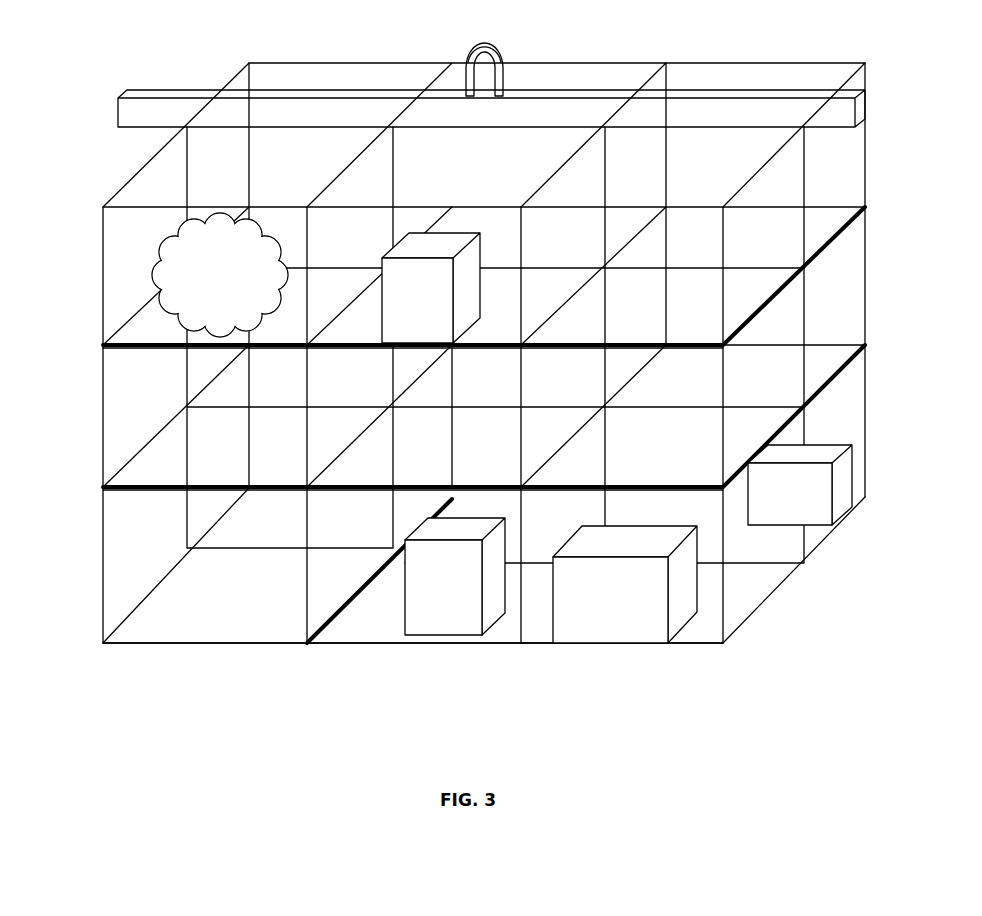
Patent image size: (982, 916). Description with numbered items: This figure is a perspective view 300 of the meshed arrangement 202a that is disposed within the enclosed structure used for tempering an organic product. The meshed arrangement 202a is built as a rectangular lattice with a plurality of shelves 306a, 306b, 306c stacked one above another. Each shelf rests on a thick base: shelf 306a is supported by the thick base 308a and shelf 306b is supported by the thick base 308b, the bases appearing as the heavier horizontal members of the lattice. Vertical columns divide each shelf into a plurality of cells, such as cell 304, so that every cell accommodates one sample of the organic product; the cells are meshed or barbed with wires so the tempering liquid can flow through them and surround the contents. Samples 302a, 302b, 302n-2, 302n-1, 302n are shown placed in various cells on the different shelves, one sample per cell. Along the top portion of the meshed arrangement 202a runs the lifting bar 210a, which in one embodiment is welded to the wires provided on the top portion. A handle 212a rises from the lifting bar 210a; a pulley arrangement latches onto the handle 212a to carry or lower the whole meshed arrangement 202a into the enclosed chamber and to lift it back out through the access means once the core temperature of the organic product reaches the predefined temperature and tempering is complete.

The perspective view 300 is at (449, 377).
The meshed arrangement 202a is at (529, 57).
The handle 212a is at (478, 46).
The lifting bar 210a is at (118, 122).
The cell 304 is at (117, 268).
The sample 302a is at (193, 296).
The sample 302b is at (397, 309).
The sample 302n-2 is at (418, 606).
The sample 302n-1 is at (589, 611).
The sample 302n is at (756, 509).
The shelf 306a is at (130, 335).
The shelf 306b is at (130, 475).
The shelf 306c is at (148, 627).
The thick base 308a is at (160, 347).
The thick base 308b is at (160, 490).